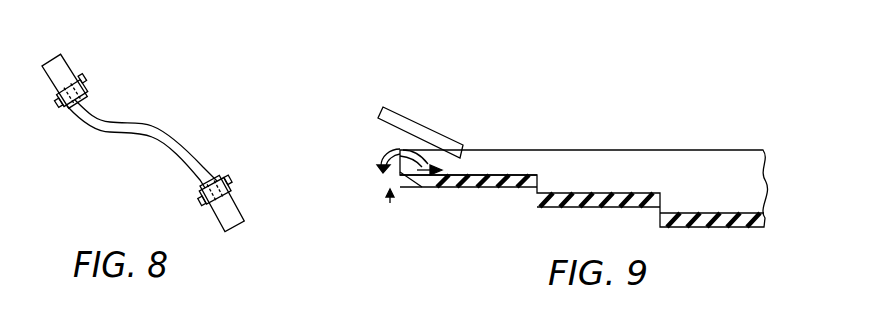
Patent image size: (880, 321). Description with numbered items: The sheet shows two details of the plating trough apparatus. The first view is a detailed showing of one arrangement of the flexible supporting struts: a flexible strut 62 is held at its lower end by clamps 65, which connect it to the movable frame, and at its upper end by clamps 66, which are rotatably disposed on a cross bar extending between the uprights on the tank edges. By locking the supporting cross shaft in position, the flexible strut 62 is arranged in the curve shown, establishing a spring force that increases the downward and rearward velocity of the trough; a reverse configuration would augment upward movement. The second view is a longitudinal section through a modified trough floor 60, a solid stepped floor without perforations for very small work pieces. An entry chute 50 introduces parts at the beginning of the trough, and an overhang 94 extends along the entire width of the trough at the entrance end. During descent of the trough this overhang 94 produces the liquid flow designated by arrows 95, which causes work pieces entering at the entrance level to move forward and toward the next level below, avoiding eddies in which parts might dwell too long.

In FIG. 9, the chute 50 is at (392, 118).
In FIG. 9, the trough floor 60 is at (633, 170).
In FIG. 8, the flexible strut 62 is at (168, 133).
In FIG. 8, the clamps 65 is at (231, 187).
In FIG. 8, the clamps 66 is at (72, 73).
In FIG. 9, the overhang 94 is at (400, 150).
In FIG. 9, the arrows 95 is at (388, 203).